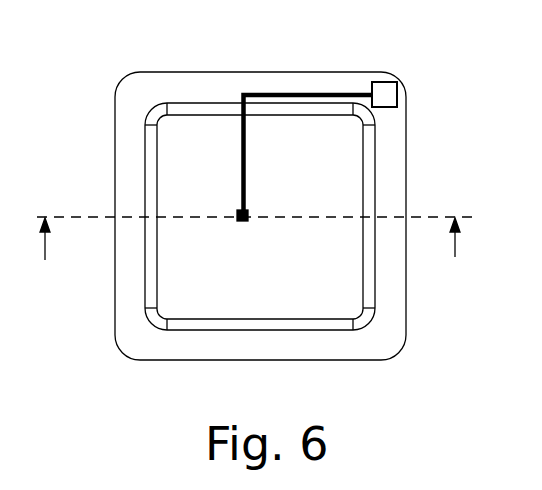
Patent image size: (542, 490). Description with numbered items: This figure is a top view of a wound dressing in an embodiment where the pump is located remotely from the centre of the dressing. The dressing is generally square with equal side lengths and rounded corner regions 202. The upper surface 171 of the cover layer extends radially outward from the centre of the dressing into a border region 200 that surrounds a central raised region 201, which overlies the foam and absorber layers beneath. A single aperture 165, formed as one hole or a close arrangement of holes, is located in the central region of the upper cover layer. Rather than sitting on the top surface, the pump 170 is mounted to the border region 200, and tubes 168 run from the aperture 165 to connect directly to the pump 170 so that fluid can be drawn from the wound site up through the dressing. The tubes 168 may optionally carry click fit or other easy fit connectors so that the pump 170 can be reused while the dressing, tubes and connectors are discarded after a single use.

The border region 200 is at (392, 316).
The central raised region 201 is at (183, 282).
The rounded corner regions 202 is at (118, 82).
The aperture 165 is at (248, 211).
The tubes 168 is at (300, 93).
The pump 170 is at (398, 92).
The upper surface 171 is at (352, 177).